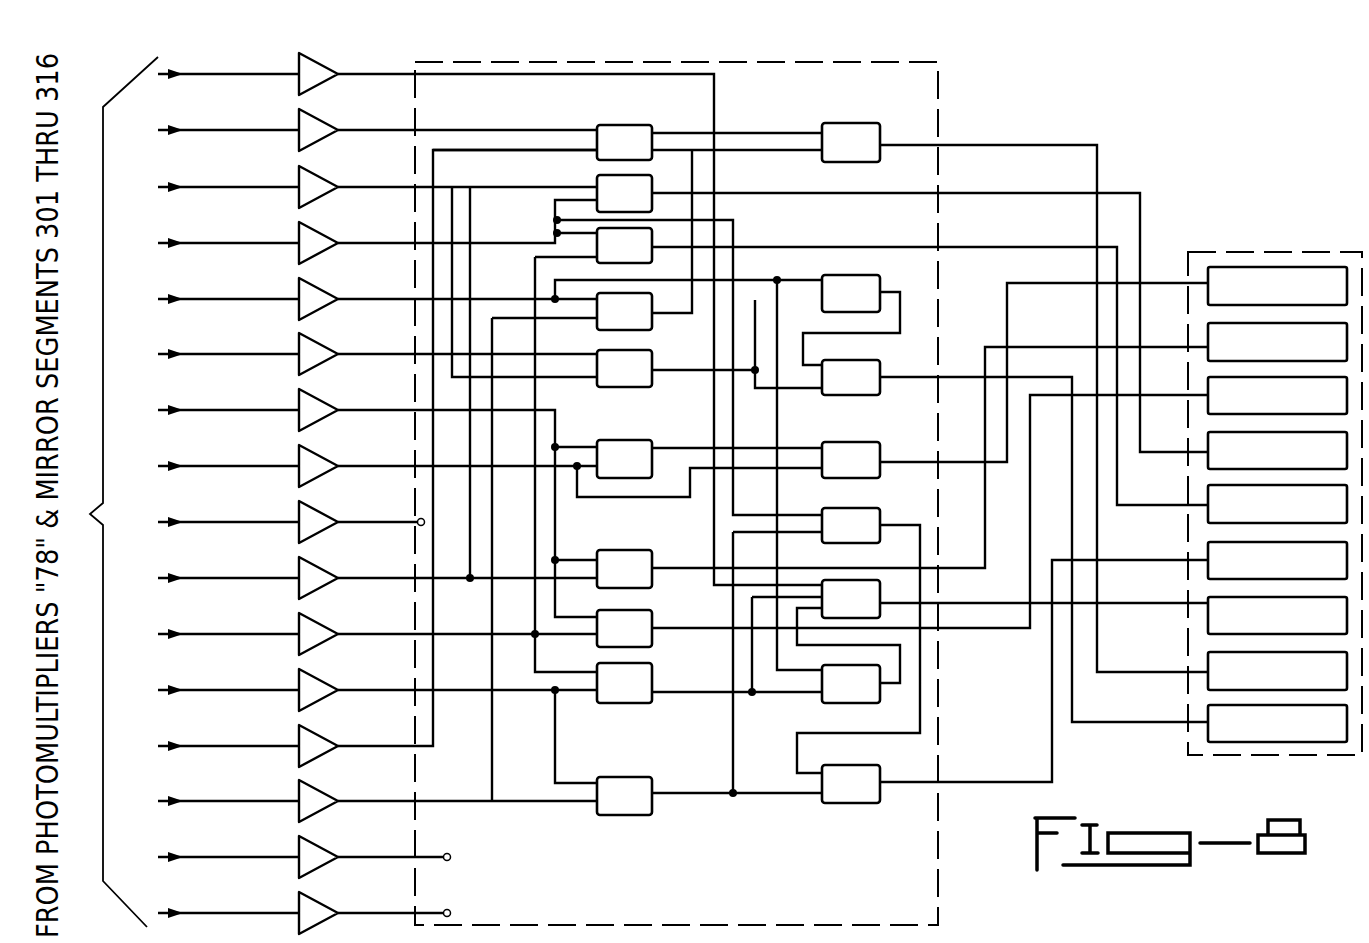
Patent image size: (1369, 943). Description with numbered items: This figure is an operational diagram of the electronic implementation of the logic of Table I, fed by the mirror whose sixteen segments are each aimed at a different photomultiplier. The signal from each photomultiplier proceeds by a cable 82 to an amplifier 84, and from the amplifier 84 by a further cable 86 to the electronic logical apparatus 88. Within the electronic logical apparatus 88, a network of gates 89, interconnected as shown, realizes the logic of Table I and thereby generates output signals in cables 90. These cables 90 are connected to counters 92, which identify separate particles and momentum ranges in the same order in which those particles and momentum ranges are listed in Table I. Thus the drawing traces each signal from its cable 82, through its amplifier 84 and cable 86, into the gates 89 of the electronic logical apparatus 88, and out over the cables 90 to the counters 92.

The cable 82 is at (214, 912).
The amplifier 84 is at (299, 338).
The cable 86 is at (393, 912).
The electronic logical apparatus 88 is at (912, 104).
The gates 89 is at (650, 781).
The cables 90 is at (1179, 719).
The counters 92 is at (1300, 236).